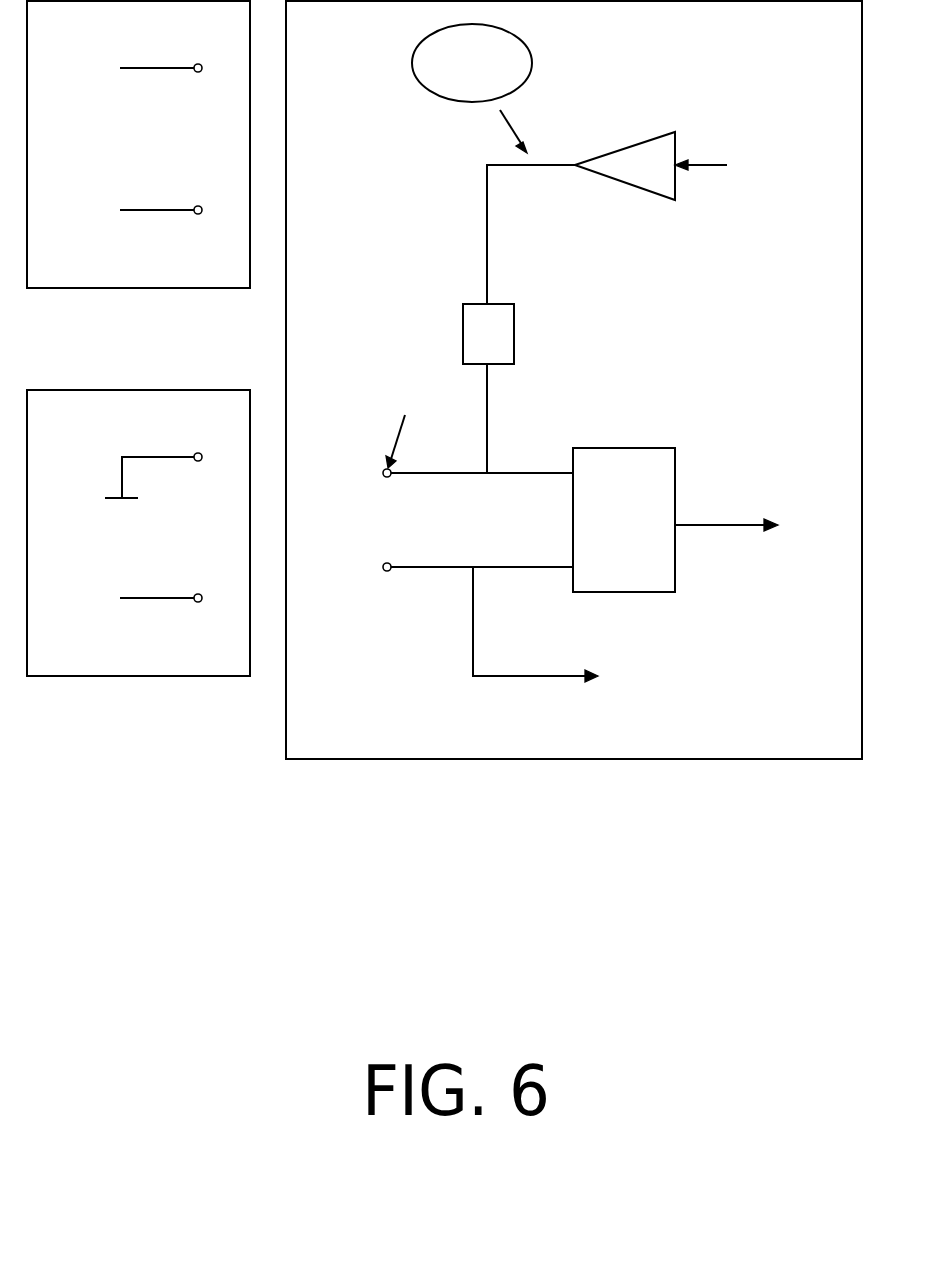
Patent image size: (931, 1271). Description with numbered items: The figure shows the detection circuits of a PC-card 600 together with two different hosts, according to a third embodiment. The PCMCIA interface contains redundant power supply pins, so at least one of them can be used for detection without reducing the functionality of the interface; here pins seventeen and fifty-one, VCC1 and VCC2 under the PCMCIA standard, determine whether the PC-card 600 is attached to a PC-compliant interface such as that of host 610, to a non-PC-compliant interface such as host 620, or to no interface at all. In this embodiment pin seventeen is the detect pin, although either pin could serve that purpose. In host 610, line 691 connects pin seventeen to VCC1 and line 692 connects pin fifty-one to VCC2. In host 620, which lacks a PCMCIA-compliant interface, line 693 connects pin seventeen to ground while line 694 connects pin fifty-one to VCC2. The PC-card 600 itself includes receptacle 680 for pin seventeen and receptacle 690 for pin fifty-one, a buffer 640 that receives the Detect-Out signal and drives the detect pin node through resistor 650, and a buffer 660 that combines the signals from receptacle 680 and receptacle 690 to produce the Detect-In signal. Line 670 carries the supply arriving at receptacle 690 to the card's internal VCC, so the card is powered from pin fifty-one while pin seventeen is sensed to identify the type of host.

The PC-card 600 is at (574, 380).
The host 610 is at (138, 144).
The host 620 is at (138, 533).
The buffer 640 is at (625, 166).
The resistor 650 is at (488, 334).
The buffer 660 is at (624, 520).
The line 670 is at (508, 678).
The receptacle 680 is at (387, 483).
The receptacle 690 is at (387, 576).
The line 691 is at (130, 69).
The line 692 is at (130, 211).
The line 693 is at (121, 475).
The line 694 is at (130, 599).